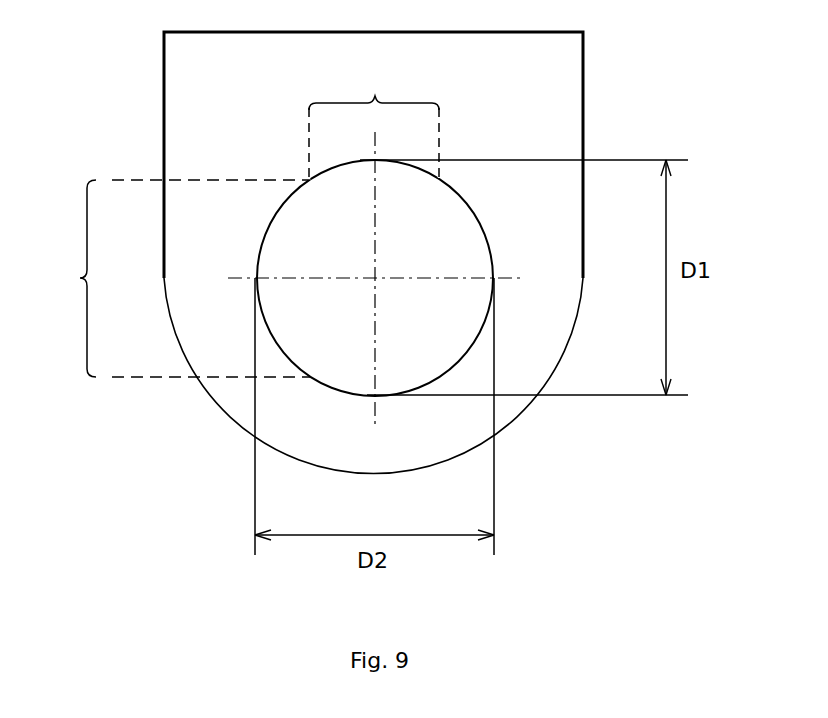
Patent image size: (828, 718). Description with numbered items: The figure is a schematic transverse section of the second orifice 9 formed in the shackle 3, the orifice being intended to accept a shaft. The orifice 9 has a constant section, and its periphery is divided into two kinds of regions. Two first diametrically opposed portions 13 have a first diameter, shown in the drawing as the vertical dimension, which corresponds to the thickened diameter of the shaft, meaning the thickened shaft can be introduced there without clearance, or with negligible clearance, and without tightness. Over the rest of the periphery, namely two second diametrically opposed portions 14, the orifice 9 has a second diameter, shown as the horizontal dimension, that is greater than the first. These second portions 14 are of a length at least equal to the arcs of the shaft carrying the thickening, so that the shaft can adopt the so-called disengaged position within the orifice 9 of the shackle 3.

The shackle 3 is at (558, 105).
The second orifice 9 is at (443, 248).
The first diametrically opposed portions 13 is at (374, 125).
The second diametrically opposed portions 14 is at (173, 278).